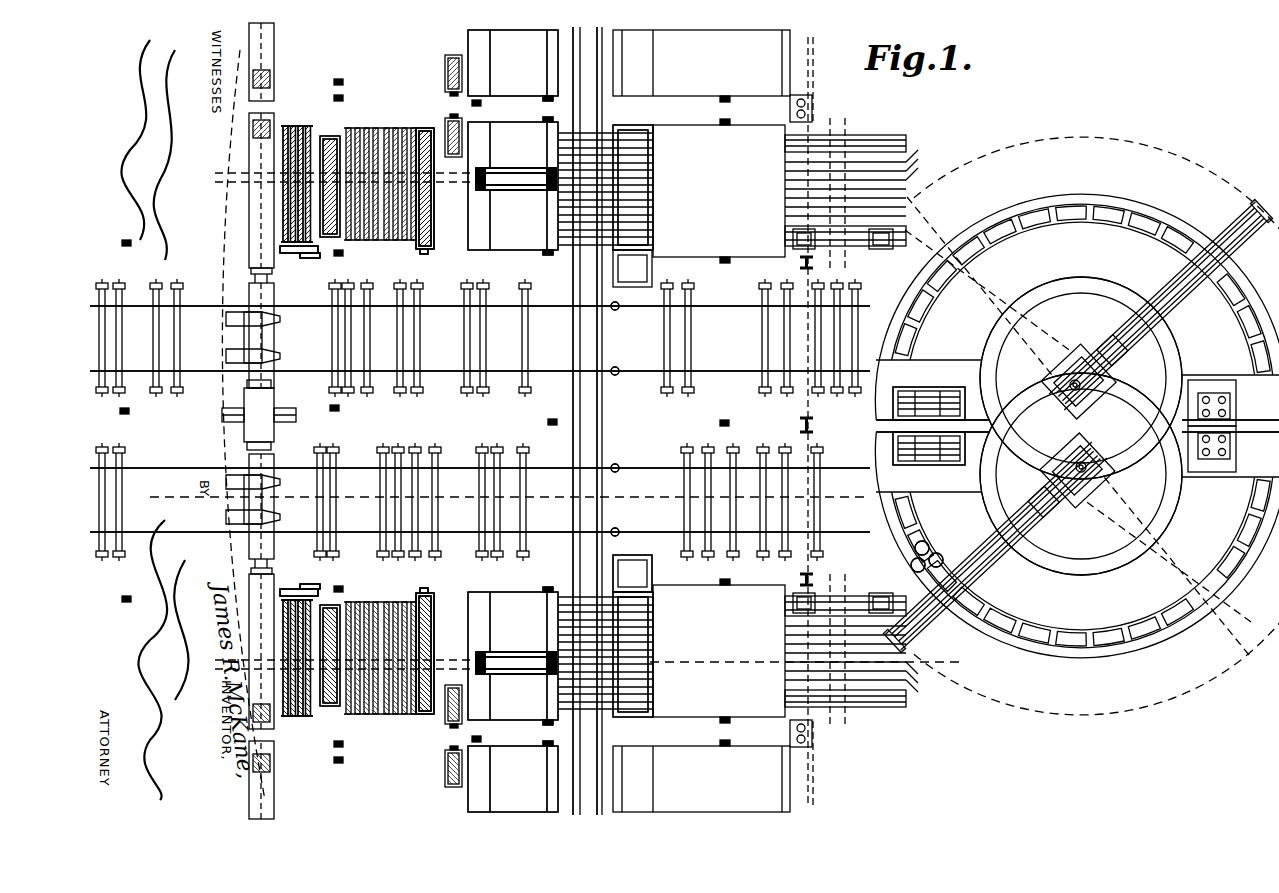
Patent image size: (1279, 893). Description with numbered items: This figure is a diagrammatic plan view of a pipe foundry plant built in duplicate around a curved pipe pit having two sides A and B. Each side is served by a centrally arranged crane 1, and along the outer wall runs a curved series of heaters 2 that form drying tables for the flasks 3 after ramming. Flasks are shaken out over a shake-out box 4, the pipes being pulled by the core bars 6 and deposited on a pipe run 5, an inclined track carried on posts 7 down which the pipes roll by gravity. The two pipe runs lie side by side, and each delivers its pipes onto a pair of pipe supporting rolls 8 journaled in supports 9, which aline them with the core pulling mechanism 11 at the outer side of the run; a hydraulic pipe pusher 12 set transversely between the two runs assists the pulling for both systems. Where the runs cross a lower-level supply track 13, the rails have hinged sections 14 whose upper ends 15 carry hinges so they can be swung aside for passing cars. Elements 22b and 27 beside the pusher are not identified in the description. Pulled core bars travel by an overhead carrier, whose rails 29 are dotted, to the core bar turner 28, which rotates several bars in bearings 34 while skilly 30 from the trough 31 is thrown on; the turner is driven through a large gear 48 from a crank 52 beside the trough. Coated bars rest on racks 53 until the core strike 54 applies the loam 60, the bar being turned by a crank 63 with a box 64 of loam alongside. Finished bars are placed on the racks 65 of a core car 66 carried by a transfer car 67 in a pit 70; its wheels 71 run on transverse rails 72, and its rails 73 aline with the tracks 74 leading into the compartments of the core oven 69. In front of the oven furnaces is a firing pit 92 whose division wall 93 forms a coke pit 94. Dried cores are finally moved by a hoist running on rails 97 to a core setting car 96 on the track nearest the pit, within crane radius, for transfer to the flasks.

The crane 1 is at (1120, 345).
The heaters 2 is at (1003, 232).
The flasks 3 is at (932, 552).
The shake-out box 4 is at (925, 400).
The pipe run 5 is at (728, 308).
The core bars 6 is at (292, 185).
The posts 7 is at (630, 565).
The pipe supporting rolls 8 is at (275, 325).
The supports 9 is at (282, 316).
The core pulling mechanism 11 is at (275, 50).
The hydraulic pipe pusher 12 is at (259, 415).
The supply track 13 is at (598, 422).
The hinged sections 14 is at (568, 370).
The upper ends 15 is at (617, 368).
The bearing 22b is at (271, 384).
The shaft 27 is at (222, 415).
The core bar turner 28 is at (300, 421).
The track bars or rails 29 is at (240, 182).
The skilly 30 is at (333, 145).
The trough 31 is at (327, 138).
The bearings 34 is at (290, 127).
The large gear 48 is at (312, 421).
The crank 52 is at (320, 250).
The racks 53 is at (378, 128).
The core strike 54 is at (425, 128).
The loam 60 is at (430, 208).
The crank 63 is at (428, 254).
The box 64 is at (462, 92).
The racks 65 is at (516, 420).
The core car 66 is at (500, 188).
The transfer car 67 is at (505, 173).
The core oven 69 is at (701, 421).
The pit 70 is at (532, 122).
The wheels 71 is at (488, 168).
The rails 72 is at (547, 52).
The rails 73 is at (478, 175).
The tracks 74 is at (640, 172).
The firing pit 92 is at (640, 130).
The division wall 93 is at (650, 255).
The coke pit 94 is at (632, 421).
The core setting car 96 is at (880, 250).
The rails 97 is at (848, 130).
The side of pipe pit A is at (1081, 493).
The side of pipe pit B is at (1081, 362).